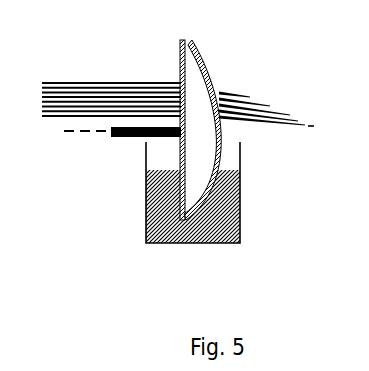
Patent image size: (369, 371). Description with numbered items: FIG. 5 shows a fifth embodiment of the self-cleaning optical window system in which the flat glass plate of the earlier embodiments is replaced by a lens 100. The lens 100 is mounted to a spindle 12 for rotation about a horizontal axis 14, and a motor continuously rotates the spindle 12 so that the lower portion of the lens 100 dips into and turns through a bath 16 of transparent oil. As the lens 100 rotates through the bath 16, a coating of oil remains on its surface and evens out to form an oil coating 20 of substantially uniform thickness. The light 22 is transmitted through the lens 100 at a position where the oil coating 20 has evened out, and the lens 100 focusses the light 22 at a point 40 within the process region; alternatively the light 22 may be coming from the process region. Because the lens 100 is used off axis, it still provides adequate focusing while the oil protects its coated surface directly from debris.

The spindle 12 is at (186, 133).
The horizontal axis 14 is at (73, 131).
The bath of transparent oil 16 is at (210, 231).
The oil coating 20 is at (211, 64).
The light 22 is at (106, 82).
The point 40 is at (316, 124).
The lens 100 is at (242, 122).